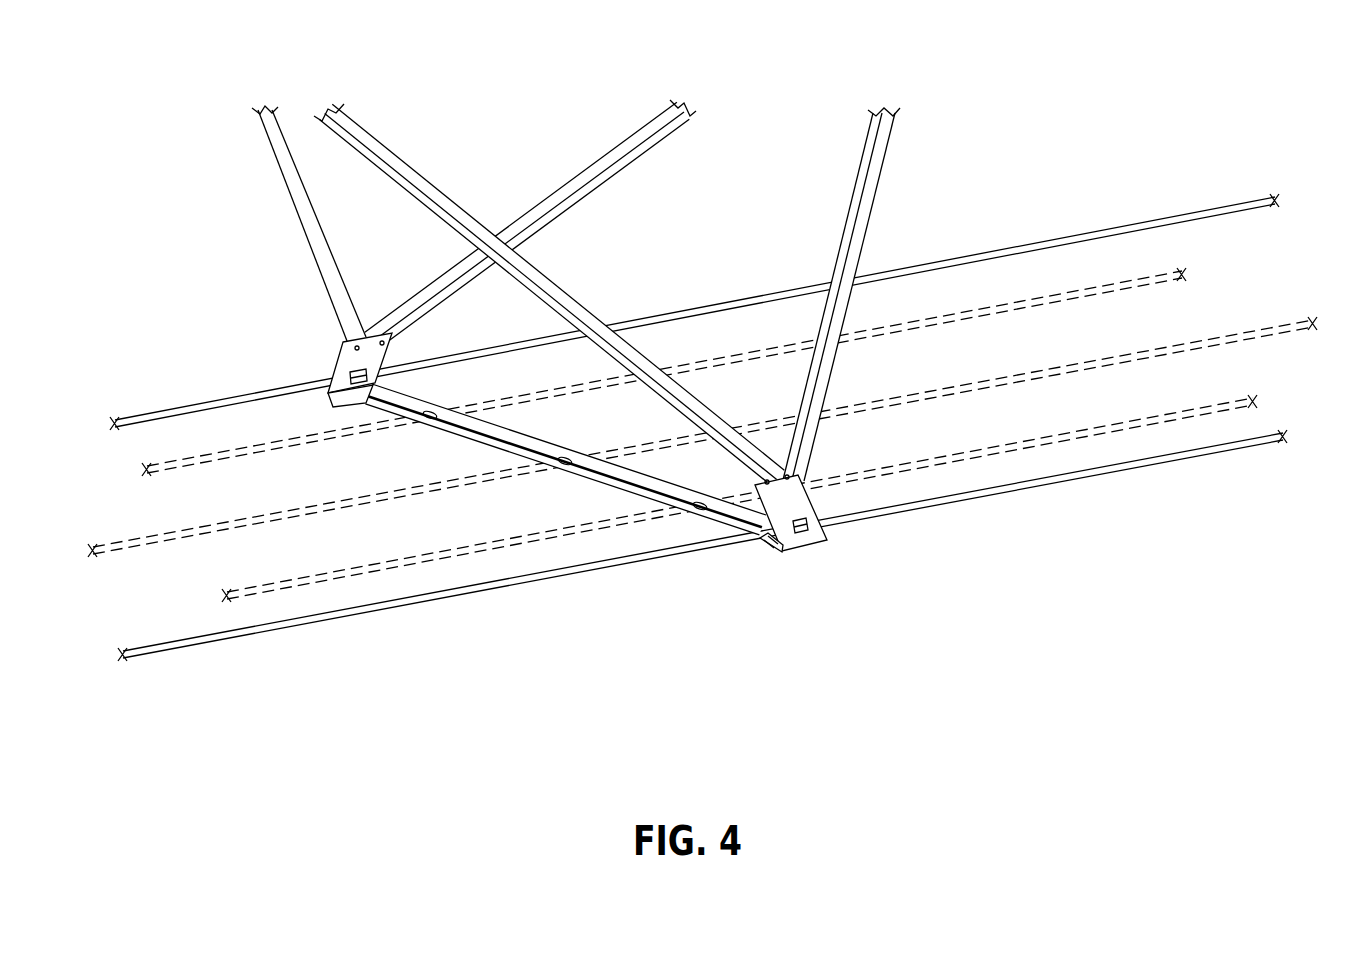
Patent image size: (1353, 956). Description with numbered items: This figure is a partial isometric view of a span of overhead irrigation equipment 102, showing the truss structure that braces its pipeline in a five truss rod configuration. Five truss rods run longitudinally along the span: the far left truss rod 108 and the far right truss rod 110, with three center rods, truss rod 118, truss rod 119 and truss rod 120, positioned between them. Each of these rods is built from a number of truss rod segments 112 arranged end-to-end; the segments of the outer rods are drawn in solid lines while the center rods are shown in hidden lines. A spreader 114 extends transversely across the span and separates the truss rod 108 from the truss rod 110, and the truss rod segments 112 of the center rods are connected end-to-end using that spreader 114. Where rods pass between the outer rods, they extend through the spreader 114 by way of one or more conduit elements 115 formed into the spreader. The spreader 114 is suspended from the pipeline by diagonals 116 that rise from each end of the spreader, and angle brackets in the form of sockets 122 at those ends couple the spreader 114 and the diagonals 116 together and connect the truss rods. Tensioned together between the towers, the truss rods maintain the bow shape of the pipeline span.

The span of overhead irrigation equipment 102 is at (702, 378).
The truss rod 108 is at (147, 408).
The truss rod 110 is at (289, 640).
The truss rod segments 112 is at (702, 443).
The spreader 114 is at (565, 448).
The conduit element 115 is at (428, 413).
The diagonals 116 is at (602, 186).
The truss rod 118 is at (178, 478).
The truss rod 119 is at (323, 520).
The truss rod 120 is at (353, 563).
The socket 122 is at (335, 405).